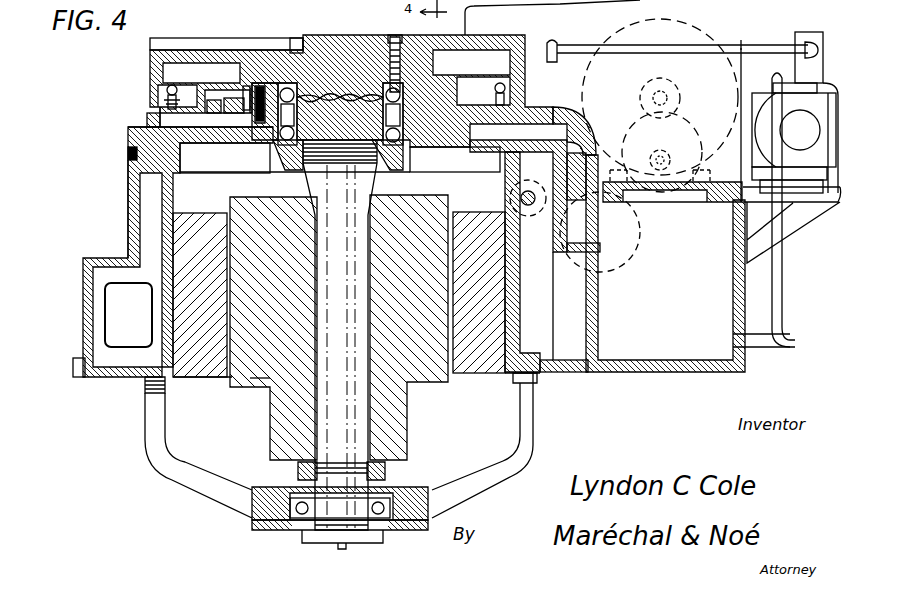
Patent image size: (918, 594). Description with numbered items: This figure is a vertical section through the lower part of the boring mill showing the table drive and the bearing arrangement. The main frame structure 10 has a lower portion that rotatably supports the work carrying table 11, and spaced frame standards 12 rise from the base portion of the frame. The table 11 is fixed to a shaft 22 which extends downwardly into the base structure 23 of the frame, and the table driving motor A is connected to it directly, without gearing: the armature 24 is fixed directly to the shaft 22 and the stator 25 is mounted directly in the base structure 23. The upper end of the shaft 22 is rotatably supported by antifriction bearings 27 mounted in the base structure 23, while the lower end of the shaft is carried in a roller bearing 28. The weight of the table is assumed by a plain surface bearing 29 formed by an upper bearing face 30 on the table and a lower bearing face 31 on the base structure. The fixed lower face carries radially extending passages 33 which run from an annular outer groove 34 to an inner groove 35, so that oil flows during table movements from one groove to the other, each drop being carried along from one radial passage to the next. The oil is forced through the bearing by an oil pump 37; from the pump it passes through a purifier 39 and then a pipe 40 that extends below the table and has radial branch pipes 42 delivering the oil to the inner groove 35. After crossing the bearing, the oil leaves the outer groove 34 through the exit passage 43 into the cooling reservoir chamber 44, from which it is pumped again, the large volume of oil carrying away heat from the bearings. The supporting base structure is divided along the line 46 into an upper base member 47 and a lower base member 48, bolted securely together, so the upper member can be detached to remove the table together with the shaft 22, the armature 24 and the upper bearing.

The main frame structure 10 is at (128, 222).
The work carrying table 11 is at (150, 62).
The frame standards 12 is at (748, 40).
The shaft 22 is at (340, 346).
The base structure 23 is at (200, 278).
The armature 24 is at (398, 410).
The stator 25 is at (466, 373).
The antifriction bearings 27 is at (300, 114).
The roller bearing 28 is at (381, 536).
The plain surface bearing 29 is at (247, 97).
The upper bearing face 30 is at (259, 88).
The lower bearing face 31 is at (440, 118).
The radial passages 33 is at (236, 113).
The outer groove 34 is at (220, 113).
The inner groove 35 is at (255, 145).
The oil pump 37 is at (792, 210).
The purifier 39 is at (812, 33).
The pipe 40 is at (175, 86).
The radial branch pipes 42 is at (147, 118).
The exit passage 43 is at (535, 179).
The cooling reservoir chamber 44 is at (688, 263).
The dividing line 46 is at (128, 153).
The upper base member 47 is at (128, 137).
The lower base member 48 is at (128, 175).
The table driving motor A is at (250, 380).